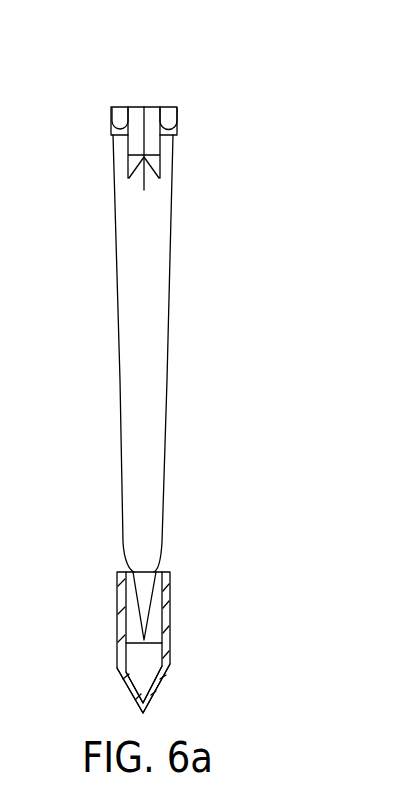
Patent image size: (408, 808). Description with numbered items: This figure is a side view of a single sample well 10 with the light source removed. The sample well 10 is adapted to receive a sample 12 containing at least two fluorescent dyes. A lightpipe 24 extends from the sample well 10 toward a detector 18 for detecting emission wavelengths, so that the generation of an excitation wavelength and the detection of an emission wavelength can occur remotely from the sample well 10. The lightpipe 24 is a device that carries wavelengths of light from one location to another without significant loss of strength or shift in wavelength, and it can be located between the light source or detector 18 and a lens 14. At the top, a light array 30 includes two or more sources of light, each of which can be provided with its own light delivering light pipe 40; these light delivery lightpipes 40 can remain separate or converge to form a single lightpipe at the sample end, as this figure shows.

The sample well 10 is at (125, 610).
The sample 12 is at (137, 665).
The lens 14 is at (138, 170).
The detector 18 is at (144, 107).
The lightpipe 24 is at (170, 360).
The light array 30 is at (122, 110).
The light delivering light pipe 40 is at (115, 156).